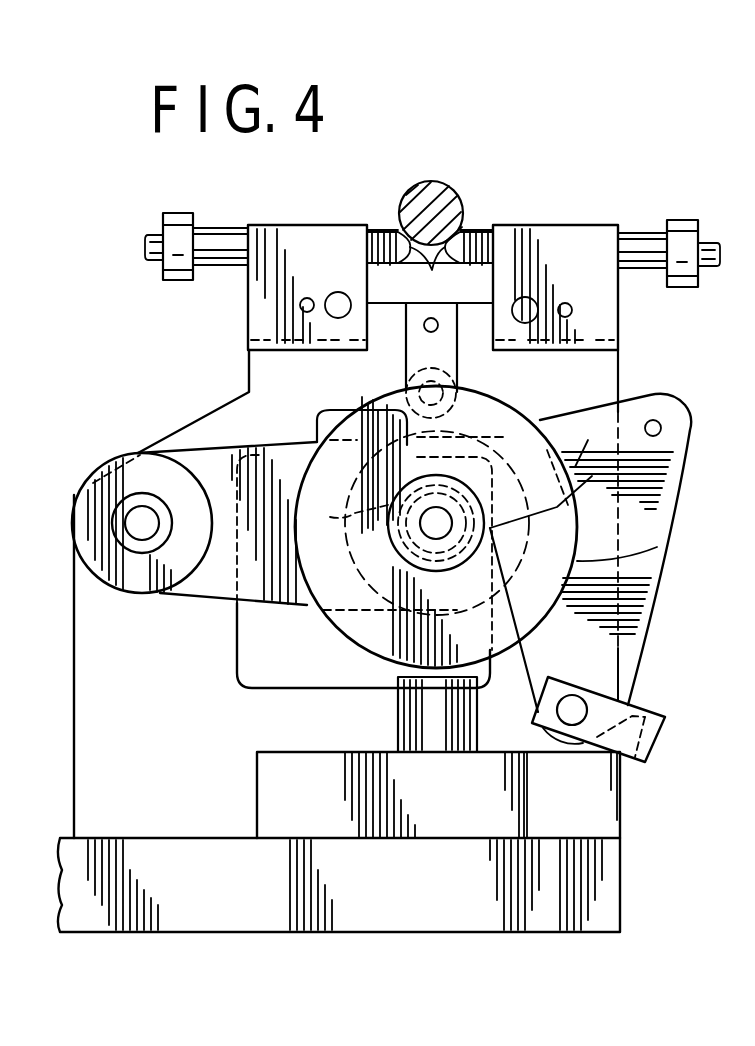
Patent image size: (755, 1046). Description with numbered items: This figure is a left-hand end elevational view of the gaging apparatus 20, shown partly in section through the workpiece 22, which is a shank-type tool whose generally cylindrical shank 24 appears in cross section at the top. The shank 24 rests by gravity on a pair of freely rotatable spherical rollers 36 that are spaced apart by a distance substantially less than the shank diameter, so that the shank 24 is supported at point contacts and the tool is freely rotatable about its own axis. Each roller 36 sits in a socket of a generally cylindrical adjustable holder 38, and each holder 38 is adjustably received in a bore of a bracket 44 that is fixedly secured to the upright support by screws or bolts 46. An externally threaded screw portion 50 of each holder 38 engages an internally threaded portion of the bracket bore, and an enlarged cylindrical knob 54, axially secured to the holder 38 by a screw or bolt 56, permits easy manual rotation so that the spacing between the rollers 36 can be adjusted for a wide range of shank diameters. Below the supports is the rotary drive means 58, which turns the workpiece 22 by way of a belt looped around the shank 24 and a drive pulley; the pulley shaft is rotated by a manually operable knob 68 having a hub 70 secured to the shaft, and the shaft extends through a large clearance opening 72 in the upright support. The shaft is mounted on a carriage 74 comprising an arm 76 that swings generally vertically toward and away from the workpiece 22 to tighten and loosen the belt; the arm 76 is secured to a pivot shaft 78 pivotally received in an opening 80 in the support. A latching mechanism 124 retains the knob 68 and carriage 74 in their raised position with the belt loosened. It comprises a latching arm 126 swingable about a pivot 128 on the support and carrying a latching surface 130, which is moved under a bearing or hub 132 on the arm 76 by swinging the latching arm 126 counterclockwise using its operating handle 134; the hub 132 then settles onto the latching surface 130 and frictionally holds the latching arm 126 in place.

The gaging apparatus 20 is at (416, 257).
The workpiece 22 is at (453, 183).
The cylindrical shank 24 is at (431, 197).
The spherical rollers 36 is at (430, 275).
The adjustable holders 38 is at (397, 233).
The bracket 44 is at (425, 306).
The screws or bolts 46 is at (338, 318).
The externally threaded screw portion 50 is at (373, 225).
The knob 54 is at (182, 213).
The screw or bolt 56 is at (146, 257).
The rotary drive means 58 is at (338, 632).
The manually operable knob 68 is at (657, 547).
The hub 70 is at (403, 548).
The clearance opening 72 is at (345, 683).
The carriage 74 is at (200, 448).
The arm 76 is at (265, 607).
The pivot shaft 78 is at (140, 500).
The opening 80 is at (148, 535).
The latching mechanism 124 is at (621, 531).
The latching arm 126 is at (670, 456).
The pivot 128 is at (576, 703).
The latching surface 130 is at (590, 442).
The bearing or hub 132 is at (344, 505).
The operating handle 134 is at (636, 706).